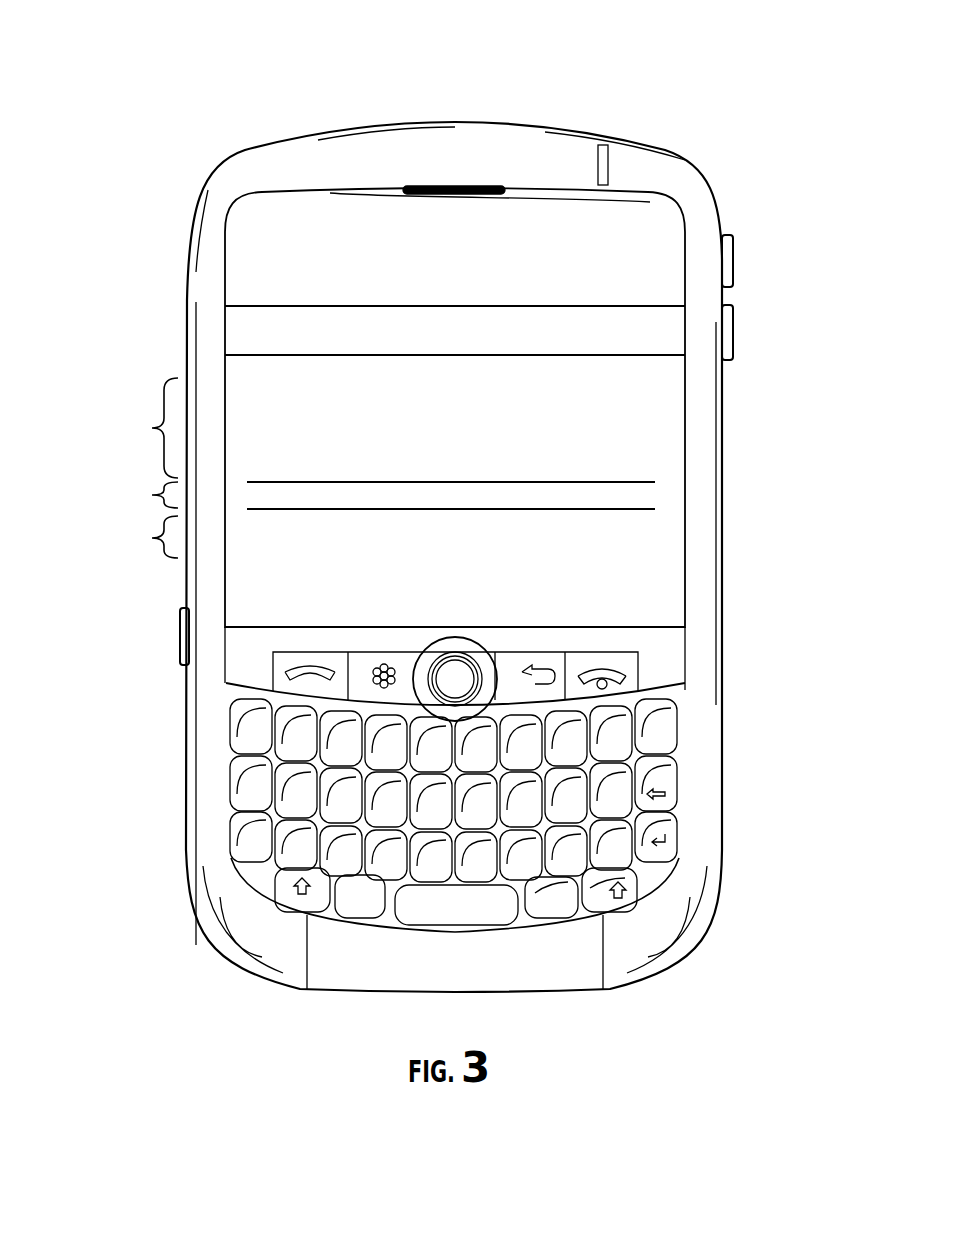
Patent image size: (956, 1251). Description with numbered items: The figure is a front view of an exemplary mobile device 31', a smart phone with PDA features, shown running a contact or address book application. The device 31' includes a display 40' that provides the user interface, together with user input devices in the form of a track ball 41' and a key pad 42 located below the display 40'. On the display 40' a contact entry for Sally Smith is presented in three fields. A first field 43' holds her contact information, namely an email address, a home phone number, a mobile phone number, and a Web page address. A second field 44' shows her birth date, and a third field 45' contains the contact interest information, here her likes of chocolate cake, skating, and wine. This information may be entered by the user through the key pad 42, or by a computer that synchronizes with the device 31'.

The mobile device 31' is at (517, 499).
The display 40' is at (512, 407).
The track ball 41' is at (606, 643).
The key pad 42 is at (676, 782).
The first field 43' is at (365, 422).
The second field 44' is at (345, 481).
The third field 45' is at (249, 531).